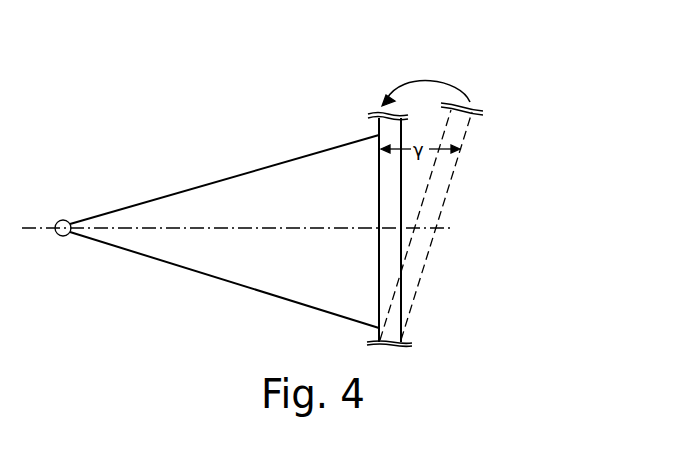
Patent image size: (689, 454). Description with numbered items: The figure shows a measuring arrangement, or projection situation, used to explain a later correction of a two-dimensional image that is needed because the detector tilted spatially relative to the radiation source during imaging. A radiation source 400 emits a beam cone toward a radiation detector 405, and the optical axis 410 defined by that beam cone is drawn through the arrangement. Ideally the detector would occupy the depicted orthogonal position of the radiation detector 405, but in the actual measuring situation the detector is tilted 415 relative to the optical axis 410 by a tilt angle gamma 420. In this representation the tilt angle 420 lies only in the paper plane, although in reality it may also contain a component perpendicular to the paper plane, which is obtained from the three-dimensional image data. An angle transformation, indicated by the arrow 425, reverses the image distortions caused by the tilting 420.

The radiation source 400 is at (63, 236).
The radiation detector 405 is at (379, 160).
The optical axis 410 is at (203, 231).
The tilted detector position 415 is at (427, 221).
The tilt angle 420 is at (436, 150).
The angle transformation arrow 425 is at (447, 78).